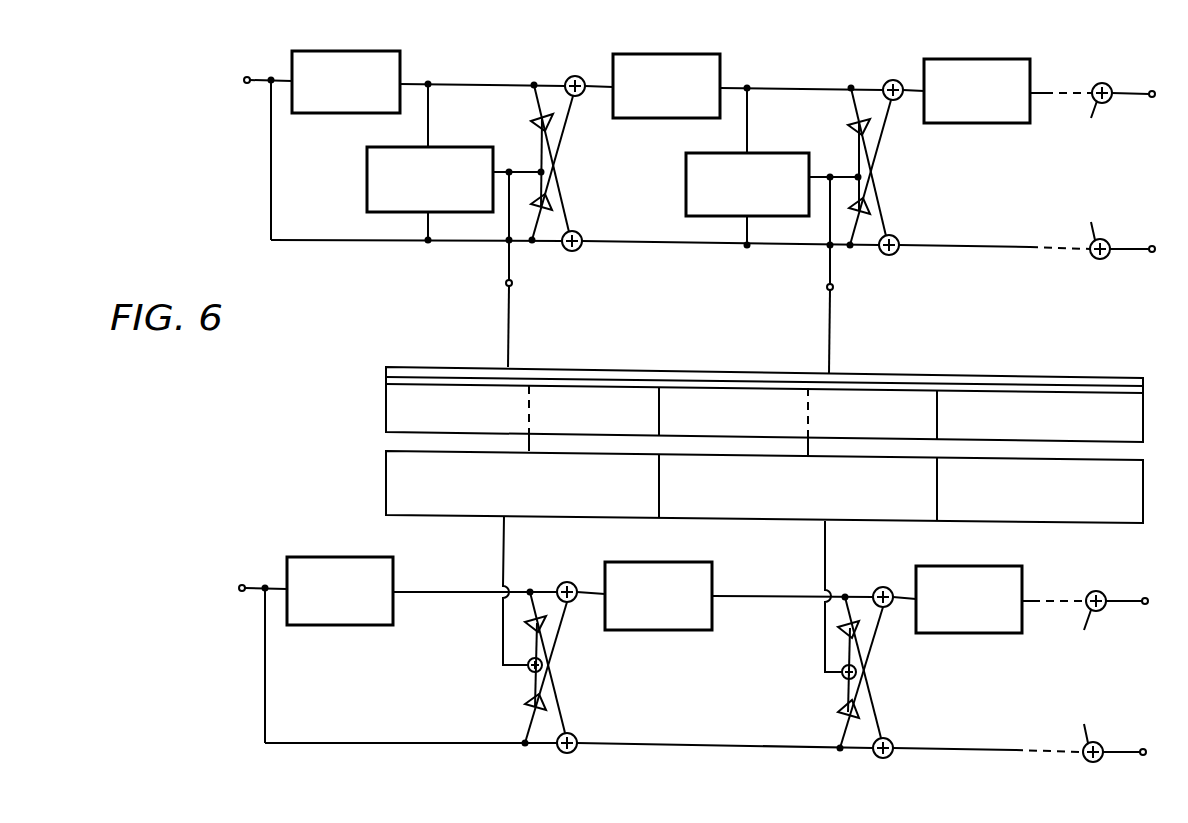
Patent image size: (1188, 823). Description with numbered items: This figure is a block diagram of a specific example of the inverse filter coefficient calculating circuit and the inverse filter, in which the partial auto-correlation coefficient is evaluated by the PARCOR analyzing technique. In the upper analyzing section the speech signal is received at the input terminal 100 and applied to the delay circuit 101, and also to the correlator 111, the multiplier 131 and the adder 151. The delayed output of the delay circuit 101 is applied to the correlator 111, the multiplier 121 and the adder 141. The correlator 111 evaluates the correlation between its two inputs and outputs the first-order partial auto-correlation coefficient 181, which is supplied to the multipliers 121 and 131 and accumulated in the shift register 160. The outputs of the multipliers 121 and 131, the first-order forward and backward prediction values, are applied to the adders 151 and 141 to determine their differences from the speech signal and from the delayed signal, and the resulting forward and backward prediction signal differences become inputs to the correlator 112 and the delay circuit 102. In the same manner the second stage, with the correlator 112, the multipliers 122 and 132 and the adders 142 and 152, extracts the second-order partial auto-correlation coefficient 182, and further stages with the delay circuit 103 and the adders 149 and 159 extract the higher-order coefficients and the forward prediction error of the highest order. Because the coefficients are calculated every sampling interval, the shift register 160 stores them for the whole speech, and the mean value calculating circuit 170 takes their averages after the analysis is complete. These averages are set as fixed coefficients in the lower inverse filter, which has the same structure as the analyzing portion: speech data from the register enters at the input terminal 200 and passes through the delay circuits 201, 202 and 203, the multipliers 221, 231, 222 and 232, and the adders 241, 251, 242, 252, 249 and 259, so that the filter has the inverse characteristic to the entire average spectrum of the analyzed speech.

The input terminal 100 is at (247, 77).
The delay circuit 101 is at (400, 64).
The delay circuit 102 is at (720, 67).
The delay circuit 103 is at (1030, 77).
The correlator 111 is at (367, 180).
The correlator 112 is at (787, 153).
The multiplier 121 is at (536, 113).
The multiplier 122 is at (853, 119).
The multiplier 131 is at (549, 203).
The multiplier 132 is at (870, 210).
The adder 141 is at (578, 77).
The adder 142 is at (893, 80).
The adder 149 is at (1107, 85).
The adder 151 is at (583, 249).
The adder 152 is at (895, 255).
The adder 159 is at (1104, 258).
The shift register 160 is at (386, 404).
The mean value calculating circuit 170 is at (386, 474).
The first-order partial auto-correlation coefficient 181 is at (512, 263).
The second-order partial auto-correlation coefficient 182 is at (833, 268).
The input terminal 200 is at (243, 585).
The delay circuit 201 is at (393, 573).
The delay circuit 202 is at (712, 578).
The delay circuit 203 is at (1022, 578).
The multiplier 221 is at (545, 624).
The multiplier 222 is at (860, 628).
The multiplier 231 is at (524, 708).
The multiplier 232 is at (838, 713).
The adder 241 is at (569, 582).
The adder 242 is at (885, 587).
The adder 249 is at (1110, 580).
The adder 251 is at (578, 738).
The adder 252 is at (893, 742).
The adder 259 is at (1099, 743).